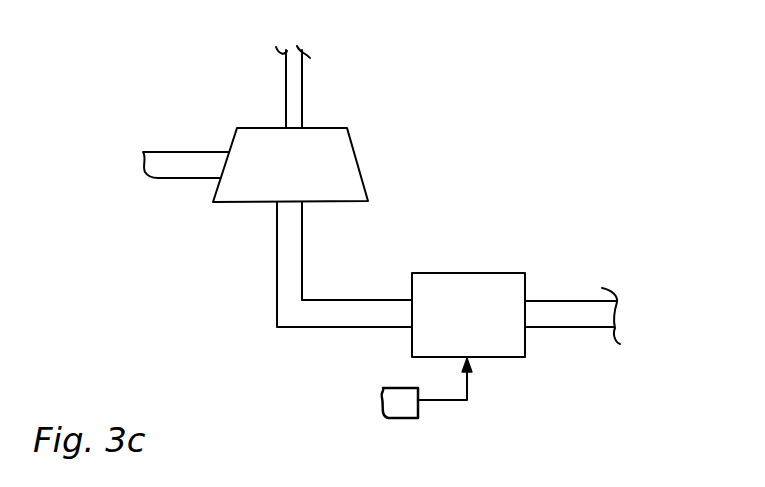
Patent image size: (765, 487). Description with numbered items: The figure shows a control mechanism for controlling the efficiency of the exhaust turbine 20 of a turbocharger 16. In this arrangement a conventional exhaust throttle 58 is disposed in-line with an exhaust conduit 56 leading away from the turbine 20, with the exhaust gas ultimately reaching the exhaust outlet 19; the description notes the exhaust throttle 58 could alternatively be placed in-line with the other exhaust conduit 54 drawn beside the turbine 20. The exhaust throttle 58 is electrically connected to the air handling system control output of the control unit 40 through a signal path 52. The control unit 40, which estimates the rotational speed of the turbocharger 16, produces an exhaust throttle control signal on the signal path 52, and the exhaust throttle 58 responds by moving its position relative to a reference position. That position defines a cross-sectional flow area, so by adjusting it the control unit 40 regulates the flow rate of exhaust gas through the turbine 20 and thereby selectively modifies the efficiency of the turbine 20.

The turbocharger 16 is at (390, 34).
The exhaust outlet 19 is at (302, 98).
The exhaust turbine 20 is at (355, 155).
The control unit 40 is at (403, 418).
The signal path 52 is at (467, 400).
The exhaust conduit 54 is at (208, 152).
The exhaust conduit 56 is at (345, 300).
The exhaust throttle 58 is at (455, 272).